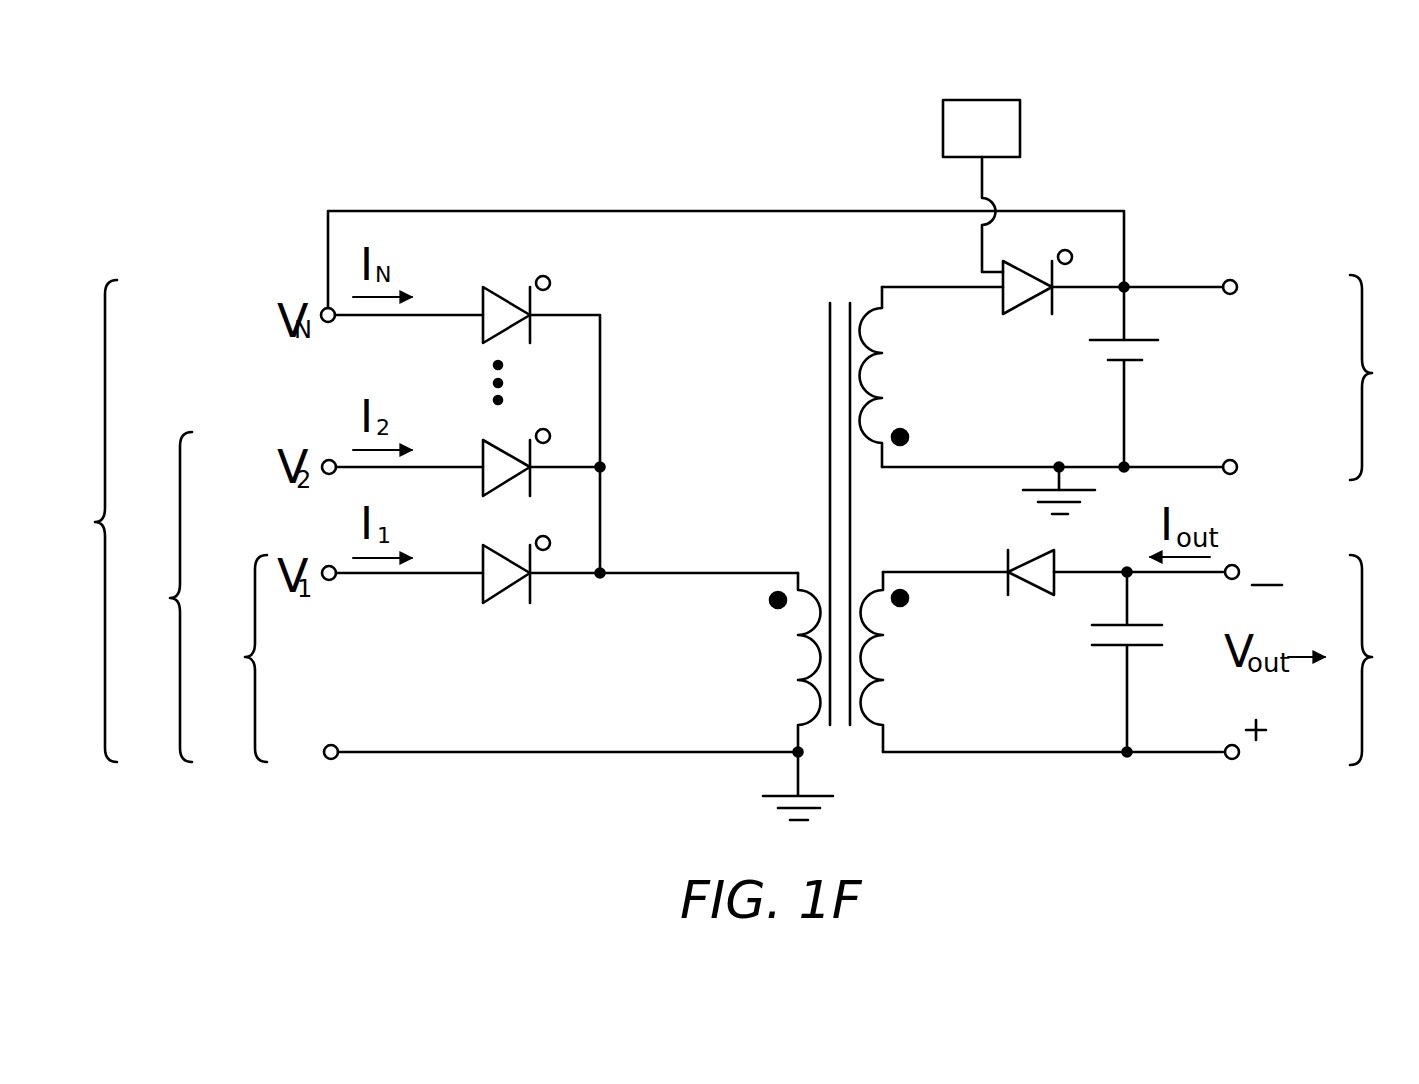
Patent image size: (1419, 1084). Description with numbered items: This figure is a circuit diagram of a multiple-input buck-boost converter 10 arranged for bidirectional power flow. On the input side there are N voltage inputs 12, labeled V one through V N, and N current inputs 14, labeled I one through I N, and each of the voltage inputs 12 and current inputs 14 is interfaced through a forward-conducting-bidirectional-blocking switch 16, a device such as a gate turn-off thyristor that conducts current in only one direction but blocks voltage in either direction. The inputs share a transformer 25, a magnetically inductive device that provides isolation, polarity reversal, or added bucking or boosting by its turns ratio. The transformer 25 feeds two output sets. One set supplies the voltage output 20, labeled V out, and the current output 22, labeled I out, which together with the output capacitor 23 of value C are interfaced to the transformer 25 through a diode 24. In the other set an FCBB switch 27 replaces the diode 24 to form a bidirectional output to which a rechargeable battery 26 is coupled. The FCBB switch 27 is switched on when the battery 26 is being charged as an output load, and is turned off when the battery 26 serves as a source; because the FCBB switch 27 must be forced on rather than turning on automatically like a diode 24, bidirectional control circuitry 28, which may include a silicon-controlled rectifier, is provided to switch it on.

The multiple-input buck-boost converter 10 is at (1236, 148).
The voltage inputs 12 is at (163, 521).
The current inputs 14 is at (323, 308).
The forward-conducting-bidirectional-blocking switch 16 is at (550, 283).
The voltage output 20 is at (1382, 520).
The current output 22 is at (1235, 280).
The output capacitor 23 is at (1145, 647).
The diode 24 is at (1033, 553).
The transformer 25 is at (860, 770).
The battery 26 is at (1137, 350).
The FCBB switch 27 is at (1072, 257).
The bidirectional control circuitry 28 is at (943, 125).